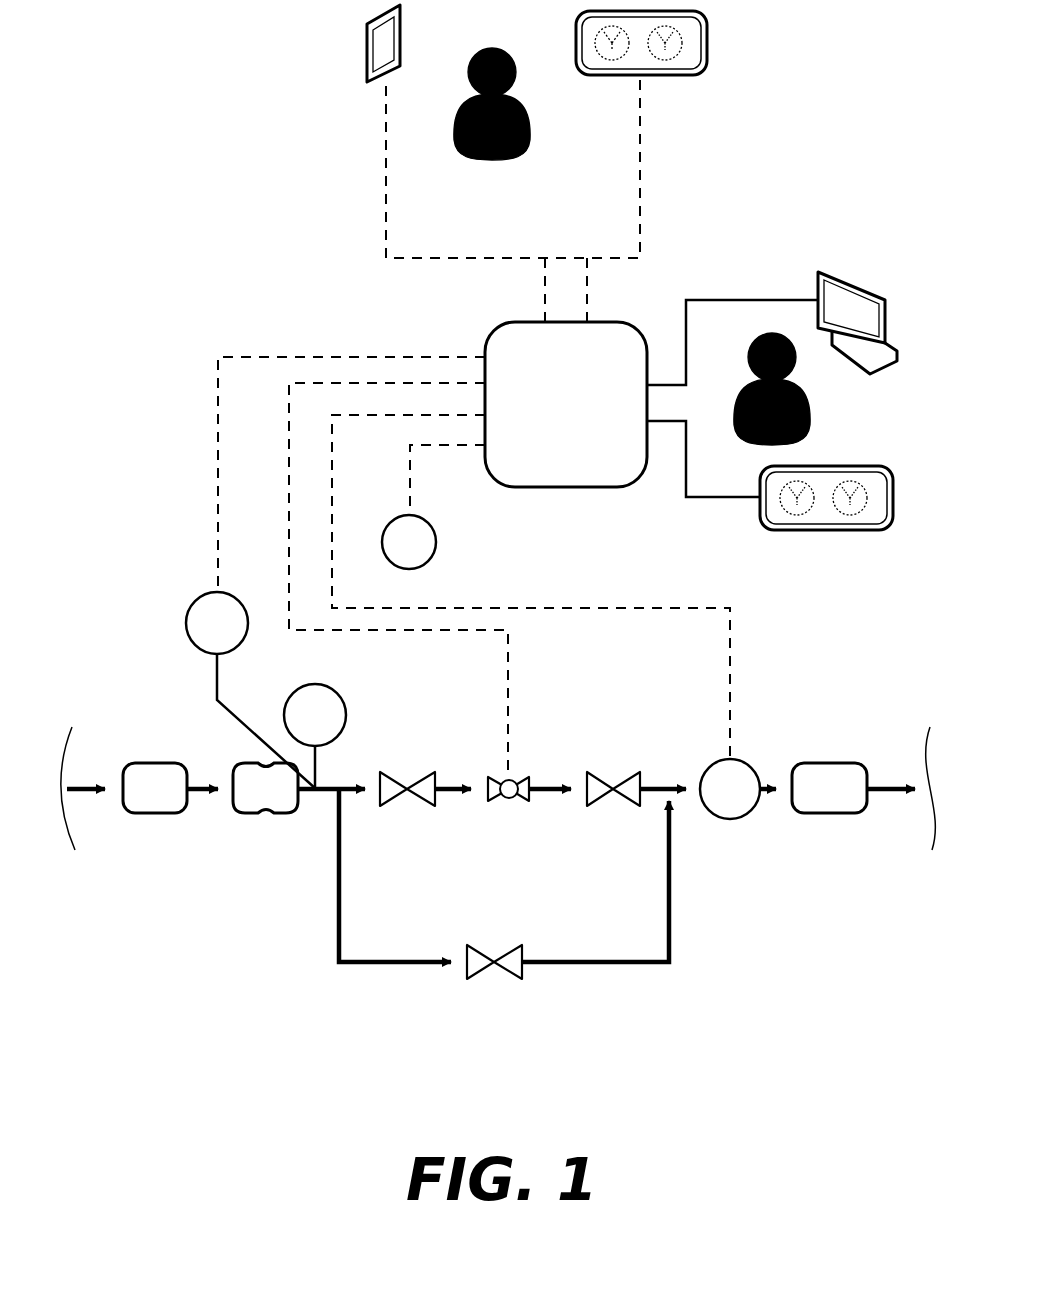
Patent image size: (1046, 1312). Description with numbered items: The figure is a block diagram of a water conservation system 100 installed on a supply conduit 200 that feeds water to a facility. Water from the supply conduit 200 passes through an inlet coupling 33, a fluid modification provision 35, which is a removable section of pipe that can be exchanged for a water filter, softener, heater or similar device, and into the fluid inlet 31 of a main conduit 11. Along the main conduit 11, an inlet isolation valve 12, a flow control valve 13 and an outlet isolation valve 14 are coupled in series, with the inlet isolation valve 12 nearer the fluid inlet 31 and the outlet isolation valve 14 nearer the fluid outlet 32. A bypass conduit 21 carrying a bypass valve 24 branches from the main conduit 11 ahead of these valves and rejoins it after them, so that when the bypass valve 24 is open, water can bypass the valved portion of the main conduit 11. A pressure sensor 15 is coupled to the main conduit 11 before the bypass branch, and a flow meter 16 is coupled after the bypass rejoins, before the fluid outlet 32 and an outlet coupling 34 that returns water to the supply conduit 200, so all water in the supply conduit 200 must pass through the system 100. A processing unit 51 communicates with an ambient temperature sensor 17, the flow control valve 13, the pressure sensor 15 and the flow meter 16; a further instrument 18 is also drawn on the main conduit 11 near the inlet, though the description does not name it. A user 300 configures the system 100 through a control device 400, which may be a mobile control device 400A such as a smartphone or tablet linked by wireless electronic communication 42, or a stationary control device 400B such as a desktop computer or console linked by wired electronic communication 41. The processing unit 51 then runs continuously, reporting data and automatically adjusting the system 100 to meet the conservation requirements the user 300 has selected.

The water conservation system 100 is at (118, 80).
The main conduit 11 is at (546, 810).
The inlet isolation valve 12 is at (418, 806).
The flow control valve 13 is at (500, 803).
The outlet isolation valve 14 is at (625, 803).
The pressure sensor 15 is at (217, 623).
The flow meter 16 is at (730, 789).
The ambient temperature sensor 17 is at (409, 542).
The fourth sensor 18 is at (315, 715).
The bypass conduit 21 is at (397, 986).
The bypass valve 24 is at (505, 966).
The fluid inlet 31 is at (203, 794).
The fluid outlet 32 is at (768, 796).
The inlet coupling 33 is at (155, 788).
The outlet coupling 34 is at (829, 788).
The fluid modification provision 35 is at (265, 788).
The wired electronic communication 41 is at (752, 300).
The wireless electronic communication 42 is at (386, 190).
The processing unit 51 is at (566, 404).
The supply conduit 200 is at (90, 784).
The user 300 is at (532, 120).
The control device 400 is at (690, 76).
The mobile control device 400A is at (367, 66).
The stationary control device 400B is at (850, 274).